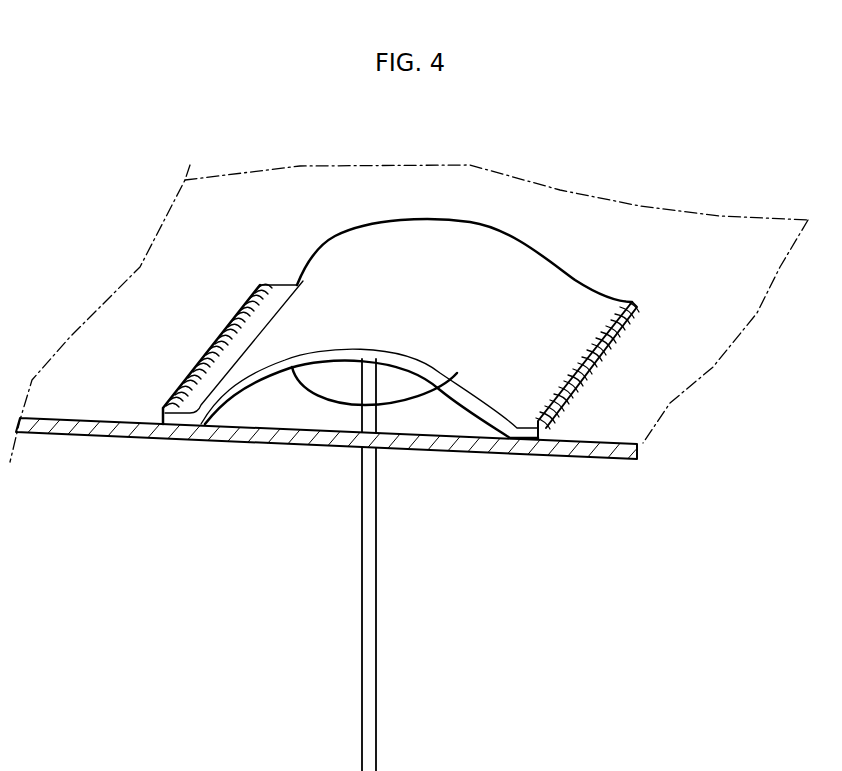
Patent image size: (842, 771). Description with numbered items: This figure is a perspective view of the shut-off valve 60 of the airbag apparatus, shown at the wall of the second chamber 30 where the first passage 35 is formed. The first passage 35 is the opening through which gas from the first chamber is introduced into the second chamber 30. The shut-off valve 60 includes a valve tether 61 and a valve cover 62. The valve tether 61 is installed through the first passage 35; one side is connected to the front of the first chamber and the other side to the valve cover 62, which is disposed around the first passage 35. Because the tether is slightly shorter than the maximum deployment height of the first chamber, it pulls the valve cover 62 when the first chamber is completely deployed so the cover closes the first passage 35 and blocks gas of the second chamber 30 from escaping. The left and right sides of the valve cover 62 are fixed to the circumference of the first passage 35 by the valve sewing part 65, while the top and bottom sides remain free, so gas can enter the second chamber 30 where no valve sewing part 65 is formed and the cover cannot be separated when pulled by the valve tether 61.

The second chamber 30 is at (162, 308).
The first passage 35 is at (346, 402).
The shut-off valve 60 is at (615, 519).
The valve tether 61 is at (378, 609).
The valve cover 62 is at (527, 373).
The valve sewing part 65 is at (595, 370).